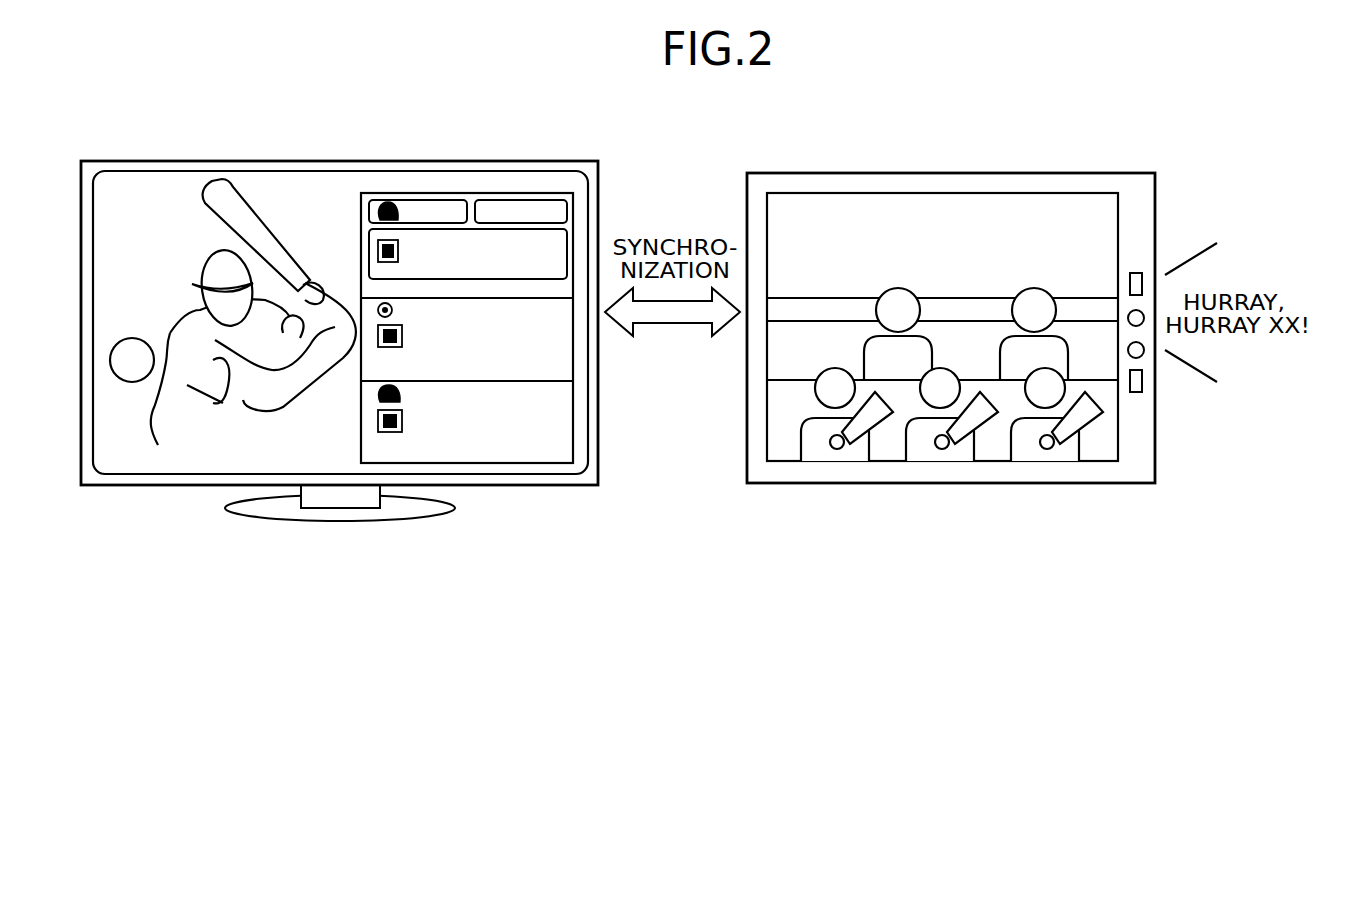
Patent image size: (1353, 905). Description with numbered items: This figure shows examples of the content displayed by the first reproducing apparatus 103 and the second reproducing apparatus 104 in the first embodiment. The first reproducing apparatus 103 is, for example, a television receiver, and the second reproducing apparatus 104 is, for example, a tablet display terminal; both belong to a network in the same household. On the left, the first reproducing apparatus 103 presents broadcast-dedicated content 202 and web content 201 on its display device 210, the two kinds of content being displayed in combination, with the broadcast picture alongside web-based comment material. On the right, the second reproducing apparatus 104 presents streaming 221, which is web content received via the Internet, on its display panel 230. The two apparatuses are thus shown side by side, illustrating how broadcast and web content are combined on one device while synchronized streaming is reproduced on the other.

The first reproducing apparatus 103 is at (359, 330).
The second reproducing apparatus 104 is at (984, 330).
The web content 201 is at (580, 211).
The broadcast-dedicated content 202 is at (285, 200).
The display device 210 is at (499, 288).
The streaming 221 is at (907, 210).
The display panel 230 is at (1118, 243).